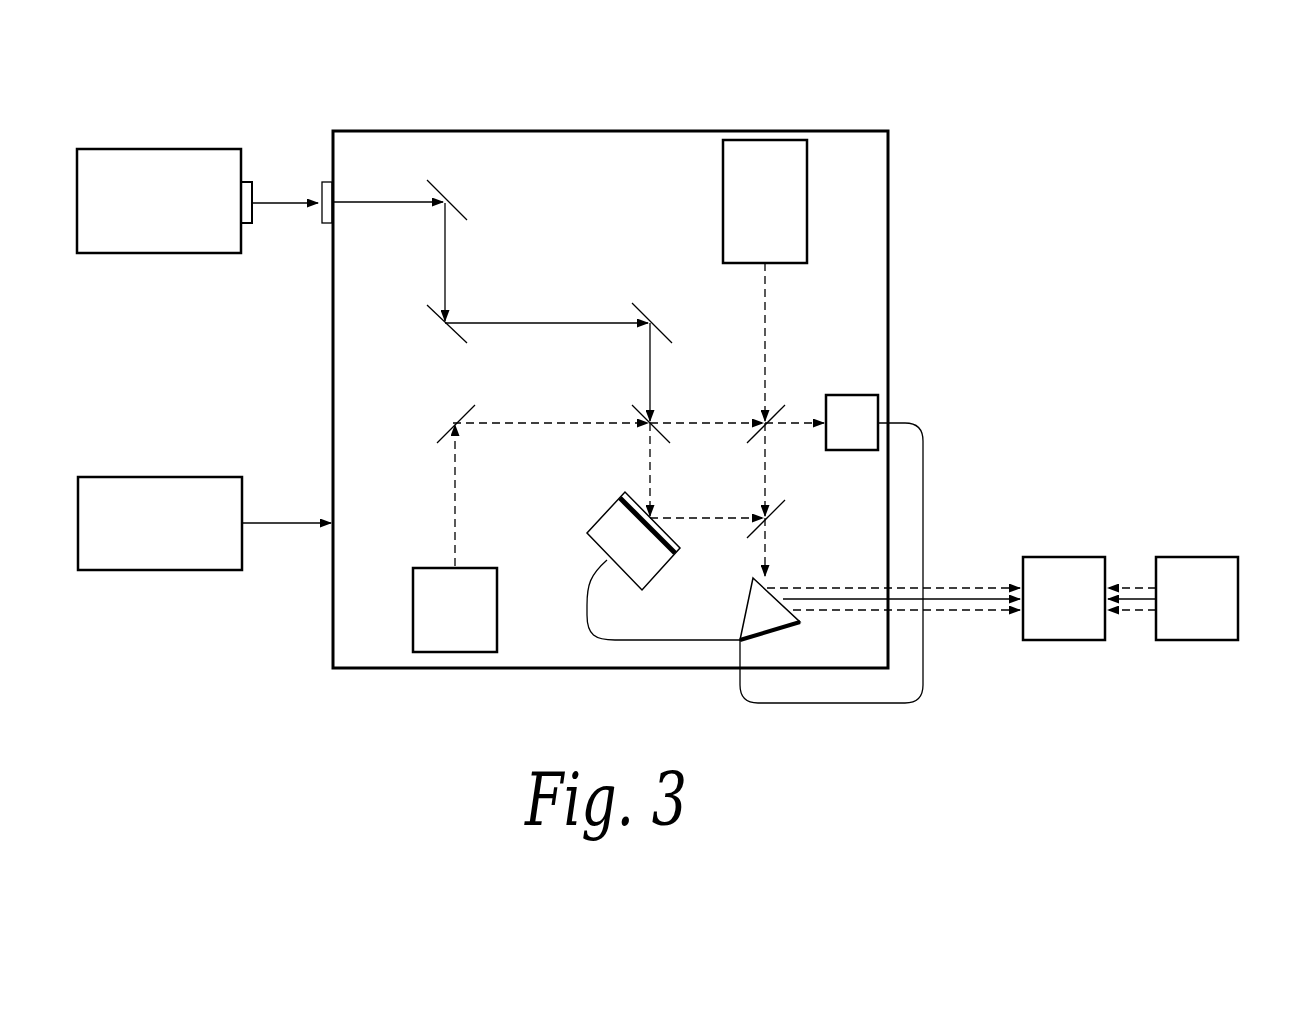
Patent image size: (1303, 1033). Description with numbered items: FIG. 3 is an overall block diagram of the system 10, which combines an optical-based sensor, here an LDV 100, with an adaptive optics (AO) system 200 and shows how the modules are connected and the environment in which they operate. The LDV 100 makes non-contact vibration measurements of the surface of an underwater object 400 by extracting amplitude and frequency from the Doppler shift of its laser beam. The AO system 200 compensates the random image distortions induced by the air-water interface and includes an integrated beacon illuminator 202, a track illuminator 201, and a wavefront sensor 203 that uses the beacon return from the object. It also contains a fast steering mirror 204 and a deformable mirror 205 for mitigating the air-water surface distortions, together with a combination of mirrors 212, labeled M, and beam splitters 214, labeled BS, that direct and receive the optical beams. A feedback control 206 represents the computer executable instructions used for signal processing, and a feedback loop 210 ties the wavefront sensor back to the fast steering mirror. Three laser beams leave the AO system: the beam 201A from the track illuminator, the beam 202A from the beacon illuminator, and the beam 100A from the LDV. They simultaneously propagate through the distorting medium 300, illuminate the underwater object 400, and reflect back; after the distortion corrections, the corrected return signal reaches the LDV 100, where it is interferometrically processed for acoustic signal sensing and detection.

The system 10 is at (1037, 125).
The optical-based sensor (LDV) 100 is at (157, 149).
The LDV laser beam 100A is at (271, 200).
The AO system 200 is at (650, 128).
The track illuminator (TILL) 201 is at (721, 210).
The TILL laser beam 201A is at (767, 315).
The beacon illuminator (BILL) 202 is at (497, 612).
The BILL laser beam 202A is at (540, 423).
The wavefront sensor 203 is at (845, 452).
The fast steering mirror 204 is at (745, 628).
The deformable mirror 205 is at (600, 530).
The AO system feedback control 206 is at (157, 477).
The feedback loop 210 is at (828, 703).
The mirrors (M) 212 is at (452, 181).
The beam splitters (BS) 214 is at (746, 405).
The distorted medium 300 is at (1068, 557).
The underwater object 400 is at (1195, 557).